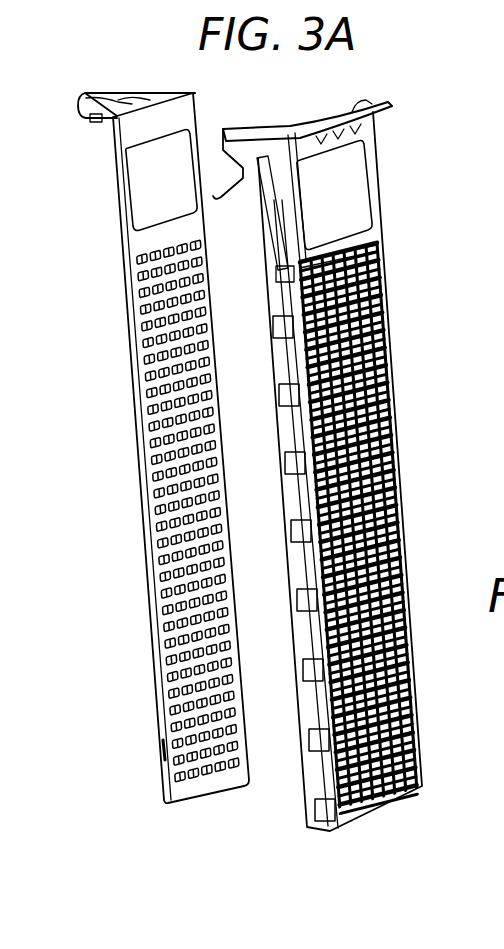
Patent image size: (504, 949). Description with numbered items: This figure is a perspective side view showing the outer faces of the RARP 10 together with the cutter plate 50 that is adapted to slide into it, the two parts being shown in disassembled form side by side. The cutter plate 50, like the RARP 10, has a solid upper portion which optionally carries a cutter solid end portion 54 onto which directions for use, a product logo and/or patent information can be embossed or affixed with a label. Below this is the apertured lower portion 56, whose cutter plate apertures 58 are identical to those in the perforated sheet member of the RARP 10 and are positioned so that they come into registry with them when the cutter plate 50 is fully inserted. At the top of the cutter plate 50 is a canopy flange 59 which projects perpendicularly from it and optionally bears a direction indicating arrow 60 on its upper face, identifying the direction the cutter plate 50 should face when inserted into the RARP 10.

The RARP 10 is at (410, 477).
The cutter plate 50 is at (112, 288).
The cutter solid end portion 54 is at (161, 180).
The apertured lower portion 56 is at (165, 622).
The cutter plate apertures 58 is at (503, 162).
The canopy flange 59 is at (143, 86).
The direction indicating arrow 60 is at (104, 88).